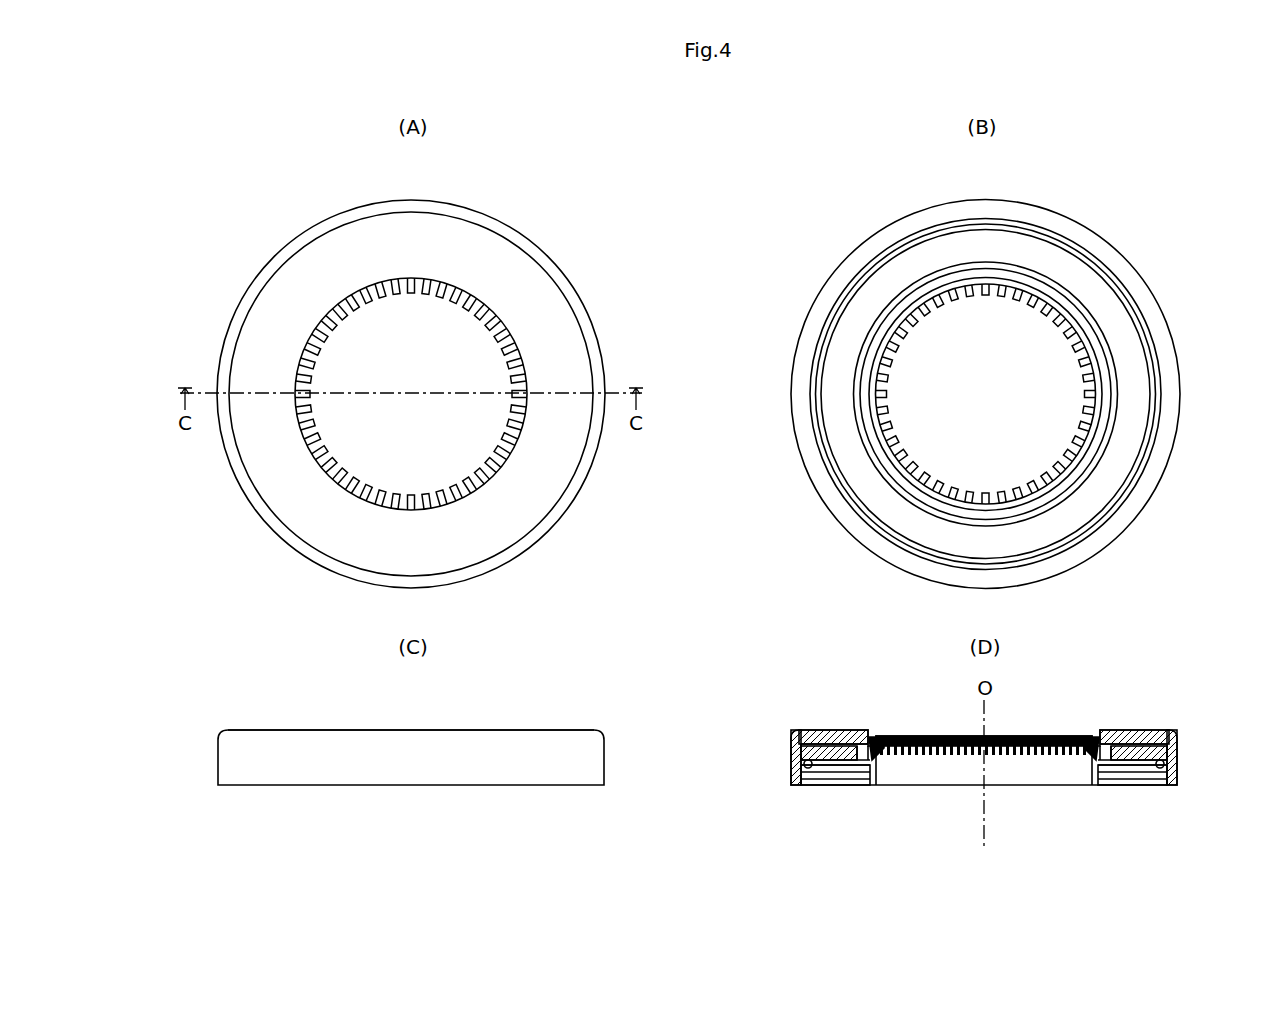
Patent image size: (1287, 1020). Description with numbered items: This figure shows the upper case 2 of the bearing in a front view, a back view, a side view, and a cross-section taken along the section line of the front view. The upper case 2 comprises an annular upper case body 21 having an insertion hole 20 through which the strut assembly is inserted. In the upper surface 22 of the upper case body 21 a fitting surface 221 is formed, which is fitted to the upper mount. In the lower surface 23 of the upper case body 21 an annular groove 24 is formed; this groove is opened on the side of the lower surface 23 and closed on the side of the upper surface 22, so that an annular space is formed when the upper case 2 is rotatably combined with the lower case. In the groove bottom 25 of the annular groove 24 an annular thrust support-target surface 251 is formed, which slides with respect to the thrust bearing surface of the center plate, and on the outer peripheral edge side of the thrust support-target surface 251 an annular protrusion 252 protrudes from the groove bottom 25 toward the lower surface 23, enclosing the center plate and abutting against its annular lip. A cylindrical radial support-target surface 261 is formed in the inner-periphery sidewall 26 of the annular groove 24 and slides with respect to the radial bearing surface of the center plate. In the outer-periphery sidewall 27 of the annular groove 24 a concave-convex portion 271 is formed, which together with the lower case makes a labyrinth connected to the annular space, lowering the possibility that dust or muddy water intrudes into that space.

The upper case 2 is at (592, 161).
The insertion hole 20 is at (461, 354).
The upper case body 21 is at (484, 212).
The upper surface 22 is at (553, 350).
The fitting surface 221 is at (337, 258).
The lower surface 23 is at (1165, 360).
The annular groove 24 is at (1125, 331).
The groove bottom 25 is at (897, 515).
The thrust support-target surface 251 is at (852, 468).
The annular protrusion 252 is at (797, 731).
The inner-periphery sidewall 26 is at (853, 385).
The radial support-target surface 261 is at (873, 318).
The outer-periphery sidewall 27 is at (800, 778).
The concave-convex portion 271 is at (817, 784).